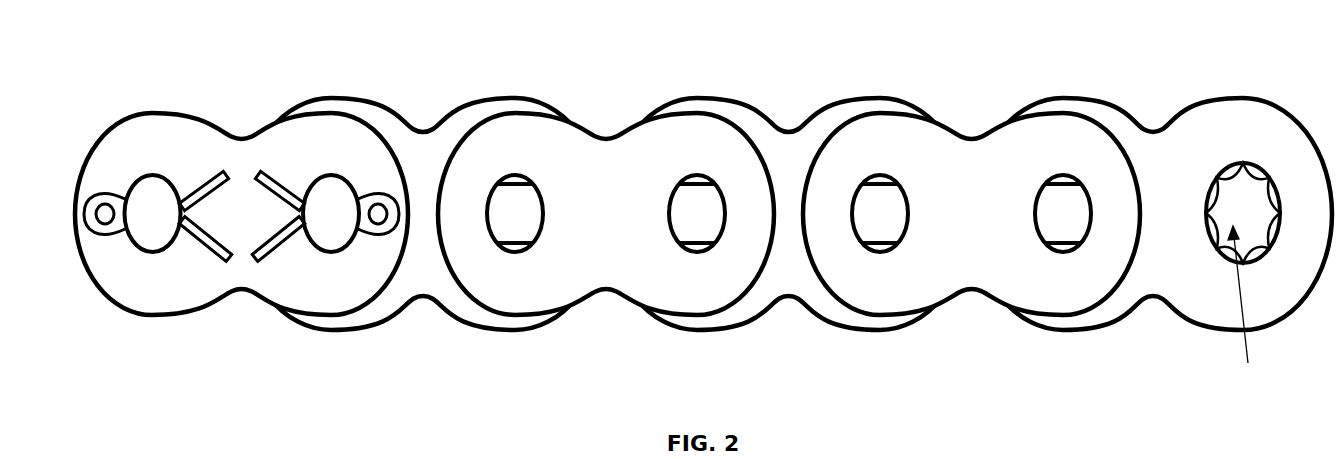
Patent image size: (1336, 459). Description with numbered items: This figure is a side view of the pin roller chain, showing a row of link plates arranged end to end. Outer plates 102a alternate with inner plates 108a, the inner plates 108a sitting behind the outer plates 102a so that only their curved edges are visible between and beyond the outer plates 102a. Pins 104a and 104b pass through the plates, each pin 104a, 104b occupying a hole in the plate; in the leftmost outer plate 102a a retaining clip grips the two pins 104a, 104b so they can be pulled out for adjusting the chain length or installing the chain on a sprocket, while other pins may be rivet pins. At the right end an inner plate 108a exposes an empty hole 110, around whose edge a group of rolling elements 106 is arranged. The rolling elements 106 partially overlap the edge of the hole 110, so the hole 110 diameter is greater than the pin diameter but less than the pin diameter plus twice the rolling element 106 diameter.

The outer plate 102a is at (235, 153).
The inner plate 108a is at (428, 152).
The pin 104a is at (153, 223).
The pin 104b is at (328, 207).
The rolling element 106 is at (1243, 165).
The hole 110 is at (1247, 308).